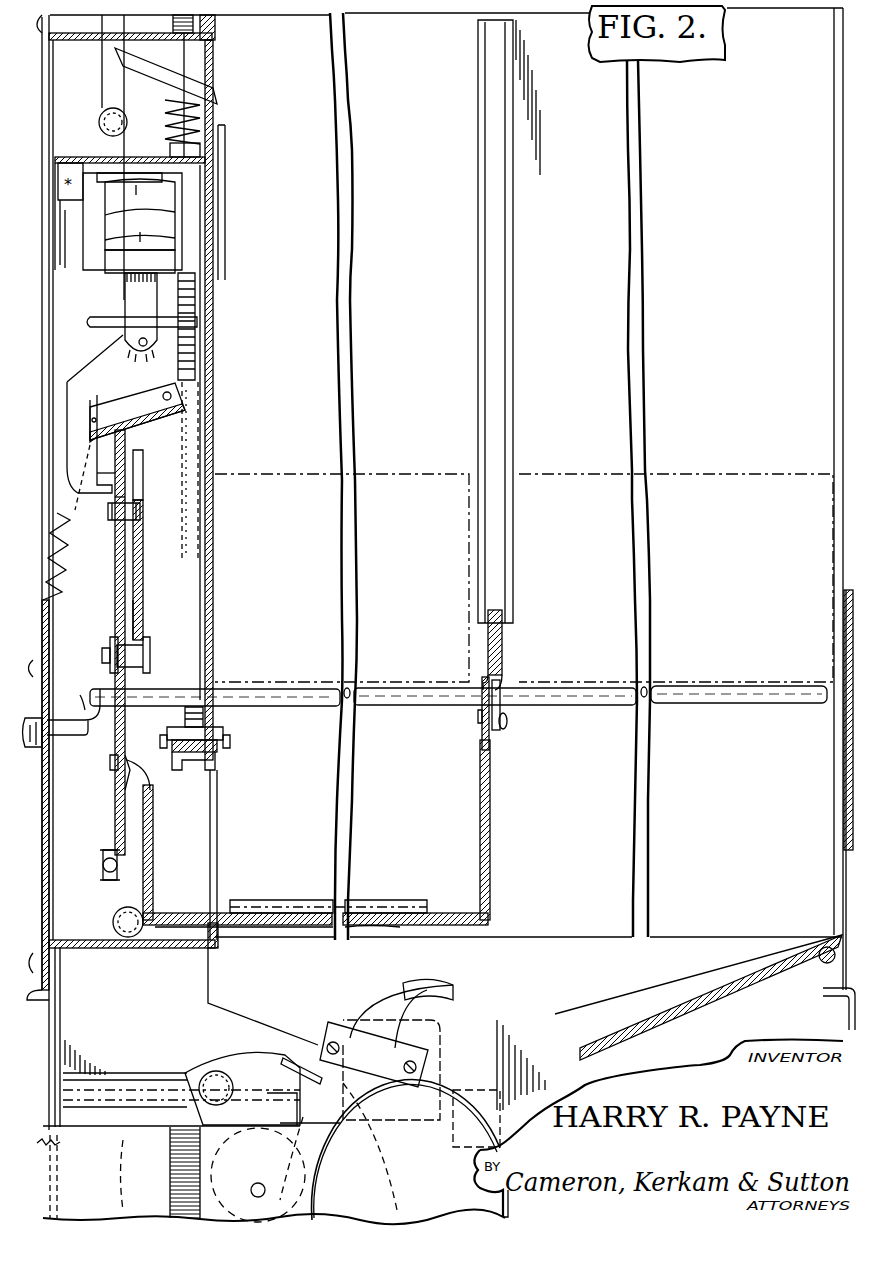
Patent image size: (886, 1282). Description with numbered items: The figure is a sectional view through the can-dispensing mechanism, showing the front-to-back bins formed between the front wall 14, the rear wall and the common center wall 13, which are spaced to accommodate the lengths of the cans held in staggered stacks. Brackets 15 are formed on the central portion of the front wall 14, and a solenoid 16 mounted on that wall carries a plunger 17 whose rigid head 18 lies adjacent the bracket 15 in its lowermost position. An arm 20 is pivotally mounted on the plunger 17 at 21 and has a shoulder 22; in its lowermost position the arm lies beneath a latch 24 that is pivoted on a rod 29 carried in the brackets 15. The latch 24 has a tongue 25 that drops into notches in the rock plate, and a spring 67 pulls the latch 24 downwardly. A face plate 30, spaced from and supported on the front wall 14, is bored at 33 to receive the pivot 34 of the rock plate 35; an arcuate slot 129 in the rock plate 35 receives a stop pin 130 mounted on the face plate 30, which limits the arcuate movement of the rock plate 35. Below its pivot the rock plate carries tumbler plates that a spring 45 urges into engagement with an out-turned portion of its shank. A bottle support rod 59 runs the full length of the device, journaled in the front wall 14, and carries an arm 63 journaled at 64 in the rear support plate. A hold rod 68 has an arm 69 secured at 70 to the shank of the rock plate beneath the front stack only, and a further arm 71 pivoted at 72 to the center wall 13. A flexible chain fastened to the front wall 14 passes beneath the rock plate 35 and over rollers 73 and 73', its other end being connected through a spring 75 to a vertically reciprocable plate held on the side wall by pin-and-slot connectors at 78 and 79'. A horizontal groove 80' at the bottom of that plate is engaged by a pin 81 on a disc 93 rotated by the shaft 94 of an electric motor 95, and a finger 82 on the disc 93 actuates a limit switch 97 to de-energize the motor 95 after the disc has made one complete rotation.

The center wall 13 is at (507, 640).
The front wall 14 is at (239, 247).
The brackets 15 is at (192, 432).
The solenoid 16 is at (156, 210).
The plunger 17 is at (118, 316).
The rigid head 18 is at (150, 308).
The arm 20 is at (70, 380).
The pivot 21 is at (150, 340).
The shoulder 22 is at (105, 475).
The latch 24 is at (128, 410).
The tongue 25 is at (95, 408).
The rod 29 is at (172, 396).
The face plate 30 is at (143, 537).
The bore 33 is at (135, 625).
The pivot 34 is at (140, 655).
The rock plate 35 is at (117, 588).
The spring 45 is at (105, 872).
The bottle support rod 59 is at (295, 700).
The arm 63 is at (80, 694).
The journal 64 is at (36, 735).
The spring 67 is at (68, 556).
The hold rod 68 is at (180, 920).
The arm 69 is at (153, 838).
The securing point 70 is at (132, 768).
The arm 71 is at (490, 830).
The pivot 72 is at (508, 720).
The roller 73 is at (328, 891).
The roller 73' is at (195, 766).
The spring 75 is at (168, 122).
The pin and slot connector 78 is at (105, 118).
The pin and slot connector 79' is at (105, 922).
The horizontal groove 80' is at (181, 1077).
The pin 81 is at (212, 1085).
The finger 82 is at (287, 1065).
The disc 93 is at (232, 1068).
The shaft 94 is at (260, 1185).
The electric motor 95 is at (125, 1145).
The limit switch 97 is at (386, 1033).
The arcuate slot 129 is at (125, 497).
The stop pin 130 is at (140, 508).